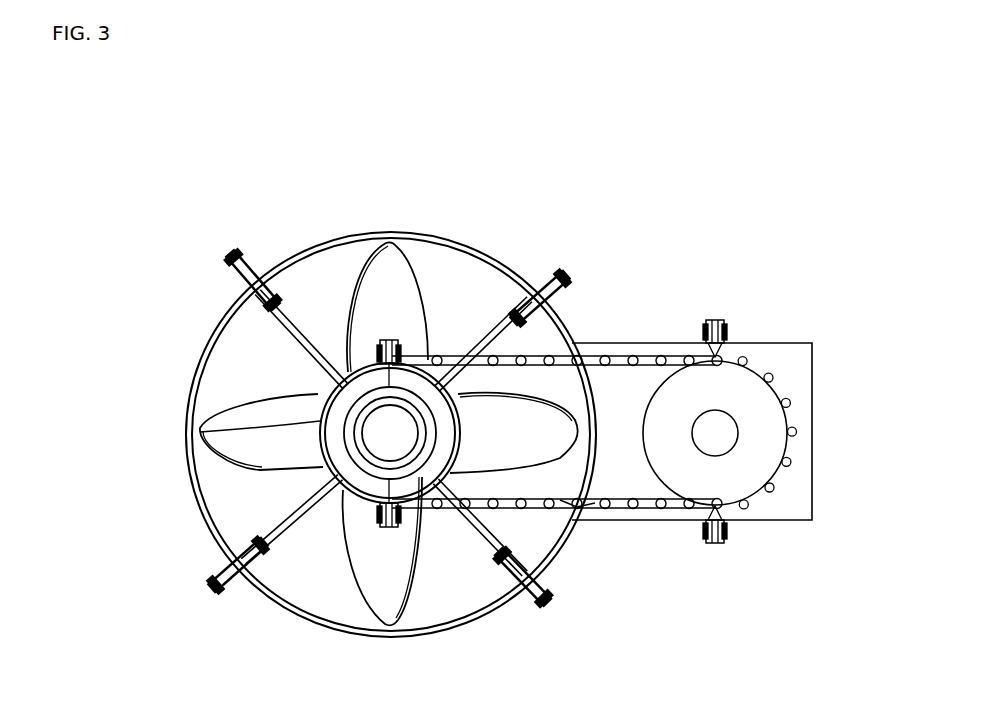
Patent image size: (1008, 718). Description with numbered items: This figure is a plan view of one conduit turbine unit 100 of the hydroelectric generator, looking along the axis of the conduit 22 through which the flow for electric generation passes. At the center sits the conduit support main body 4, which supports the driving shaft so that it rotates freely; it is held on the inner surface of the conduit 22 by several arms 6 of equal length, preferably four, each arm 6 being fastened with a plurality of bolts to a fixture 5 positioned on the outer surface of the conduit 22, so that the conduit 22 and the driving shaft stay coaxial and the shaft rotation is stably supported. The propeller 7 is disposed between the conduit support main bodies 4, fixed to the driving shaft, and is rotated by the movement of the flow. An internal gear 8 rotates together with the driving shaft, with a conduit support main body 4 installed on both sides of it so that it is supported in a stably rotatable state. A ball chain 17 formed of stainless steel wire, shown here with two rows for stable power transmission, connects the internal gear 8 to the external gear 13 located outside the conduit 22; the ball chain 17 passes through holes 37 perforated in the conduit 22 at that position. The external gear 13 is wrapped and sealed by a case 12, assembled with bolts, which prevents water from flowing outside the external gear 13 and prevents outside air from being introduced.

The conduit turbine unit 100 is at (162, 303).
The conduit support main body 4 is at (330, 472).
The fixture 5 is at (248, 267).
The arm 6 is at (310, 336).
The propeller 7 is at (403, 267).
The internal gear 8 is at (320, 421).
The case 12 is at (780, 343).
The external gear 13 is at (760, 450).
The ball chain 17 is at (600, 357).
The conduit 22 is at (325, 240).
The hole 37 is at (577, 507).